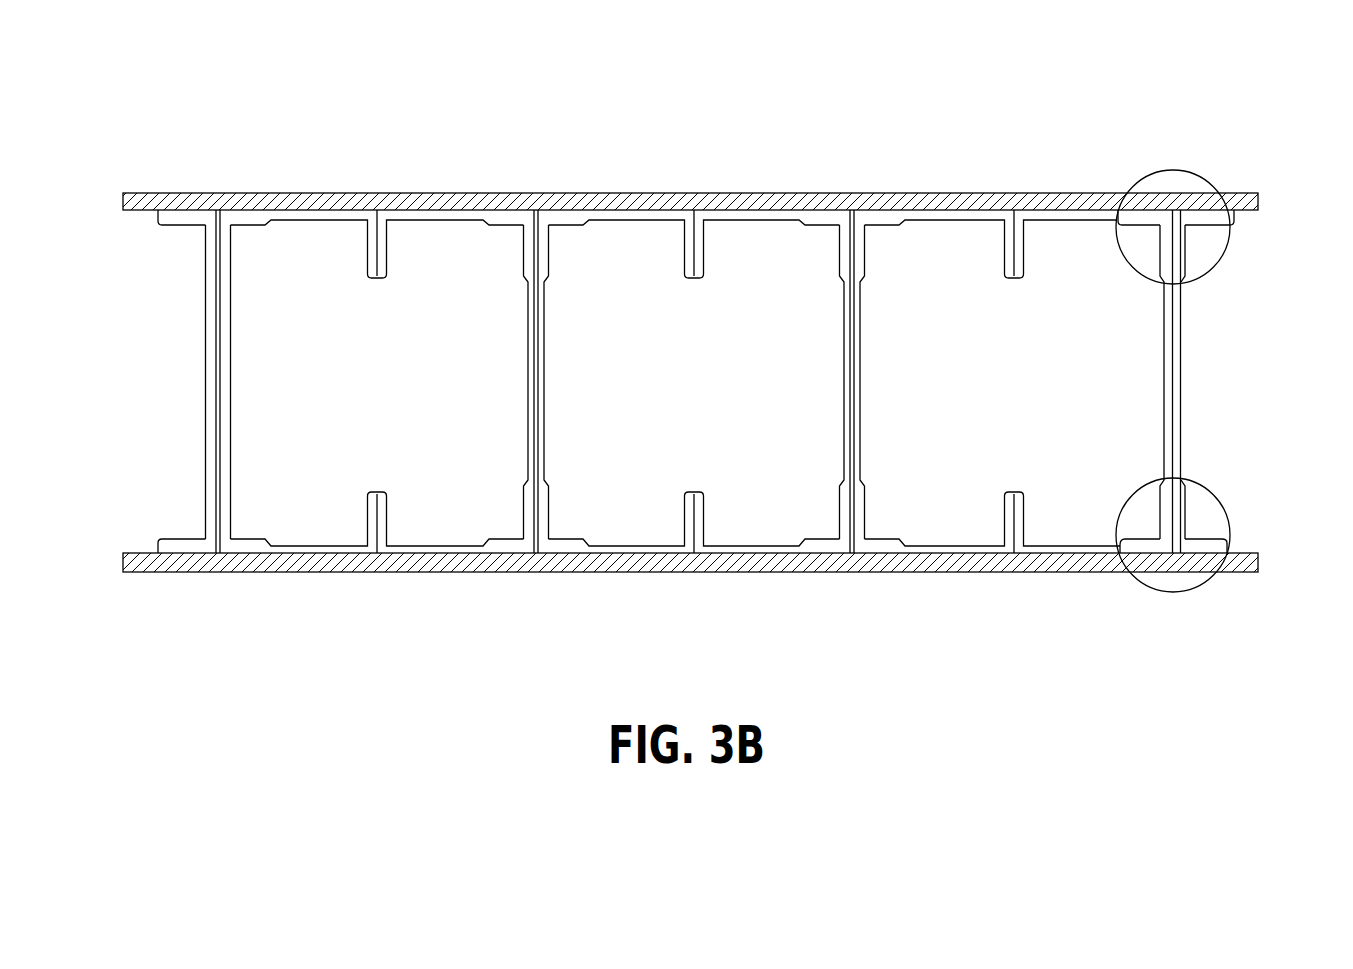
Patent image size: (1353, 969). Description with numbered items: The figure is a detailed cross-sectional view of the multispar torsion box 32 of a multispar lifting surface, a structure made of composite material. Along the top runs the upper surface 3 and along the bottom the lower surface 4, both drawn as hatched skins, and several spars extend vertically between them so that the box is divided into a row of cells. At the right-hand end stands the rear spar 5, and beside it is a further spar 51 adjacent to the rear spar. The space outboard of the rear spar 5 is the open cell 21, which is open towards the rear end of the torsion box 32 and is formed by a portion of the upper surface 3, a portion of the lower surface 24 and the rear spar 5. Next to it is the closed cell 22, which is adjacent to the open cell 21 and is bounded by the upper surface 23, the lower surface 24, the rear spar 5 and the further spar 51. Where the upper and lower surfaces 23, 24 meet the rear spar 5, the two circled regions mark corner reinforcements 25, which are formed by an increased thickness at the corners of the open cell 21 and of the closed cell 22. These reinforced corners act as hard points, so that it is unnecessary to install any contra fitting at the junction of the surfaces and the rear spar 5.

The multispar torsion box 32 is at (206, 115).
The upper surface 3 is at (377, 193).
The lower surface 4 is at (372, 572).
The upper surface 23 is at (607, 218).
The lower surface 24 is at (603, 553).
The closed cell 22 is at (1038, 325).
The further spar 51 is at (852, 405).
The open cell 21 is at (1195, 340).
The rear spar 5 is at (1181, 405).
The corner reinforcements 25 is at (1180, 172).